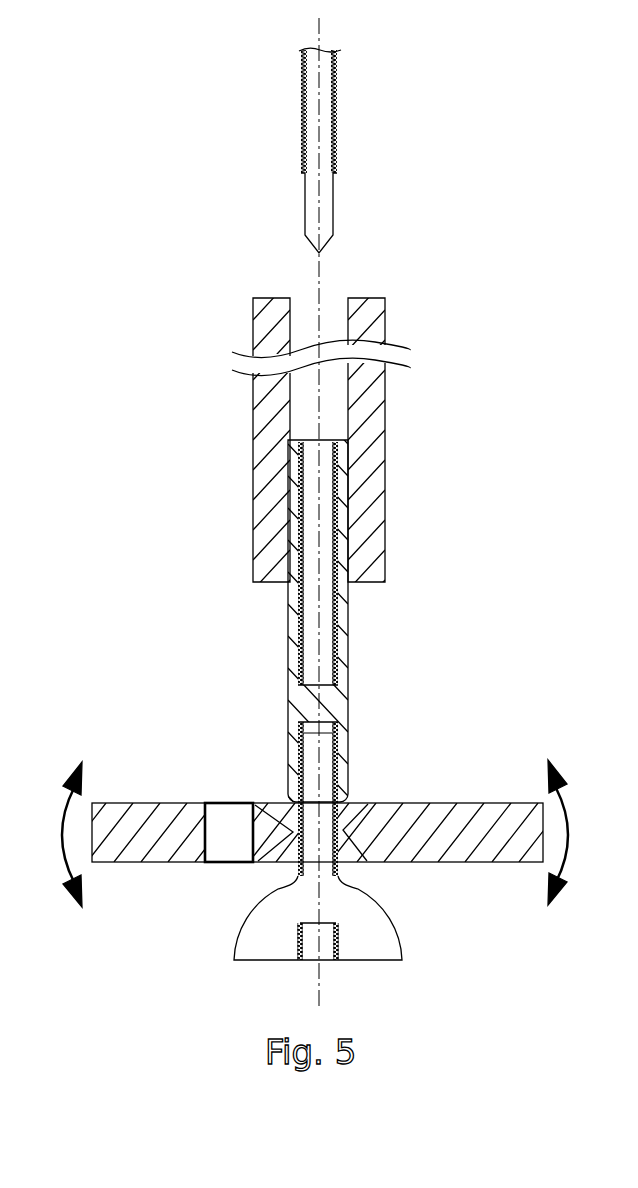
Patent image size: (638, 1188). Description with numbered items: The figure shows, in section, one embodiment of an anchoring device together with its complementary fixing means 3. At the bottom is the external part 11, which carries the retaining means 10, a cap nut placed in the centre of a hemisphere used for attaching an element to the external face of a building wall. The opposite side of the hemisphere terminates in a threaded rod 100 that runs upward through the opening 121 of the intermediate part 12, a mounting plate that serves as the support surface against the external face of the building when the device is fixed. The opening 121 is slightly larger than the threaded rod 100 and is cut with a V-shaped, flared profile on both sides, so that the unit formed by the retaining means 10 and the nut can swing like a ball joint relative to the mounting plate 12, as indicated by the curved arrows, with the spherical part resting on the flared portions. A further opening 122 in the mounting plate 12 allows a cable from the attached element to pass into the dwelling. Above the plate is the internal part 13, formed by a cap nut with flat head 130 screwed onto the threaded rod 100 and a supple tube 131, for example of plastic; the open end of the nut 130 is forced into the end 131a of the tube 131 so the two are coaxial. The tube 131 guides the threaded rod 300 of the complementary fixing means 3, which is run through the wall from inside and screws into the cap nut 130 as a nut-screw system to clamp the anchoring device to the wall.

The complementary fixing means 3 is at (200, 117).
The threaded rod 300 is at (307, 203).
The internal part 13 is at (309, 570).
The supple tube 131 is at (284, 450).
The end of the tube 131a is at (244, 525).
The cap nut with flat head 130 is at (290, 650).
The opening 121 is at (281, 797).
The intermediate part 12 is at (312, 786).
The opening 122 is at (228, 805).
The external part 11 is at (358, 868).
The threaded rod 100 is at (343, 858).
The retaining means 10 is at (323, 953).